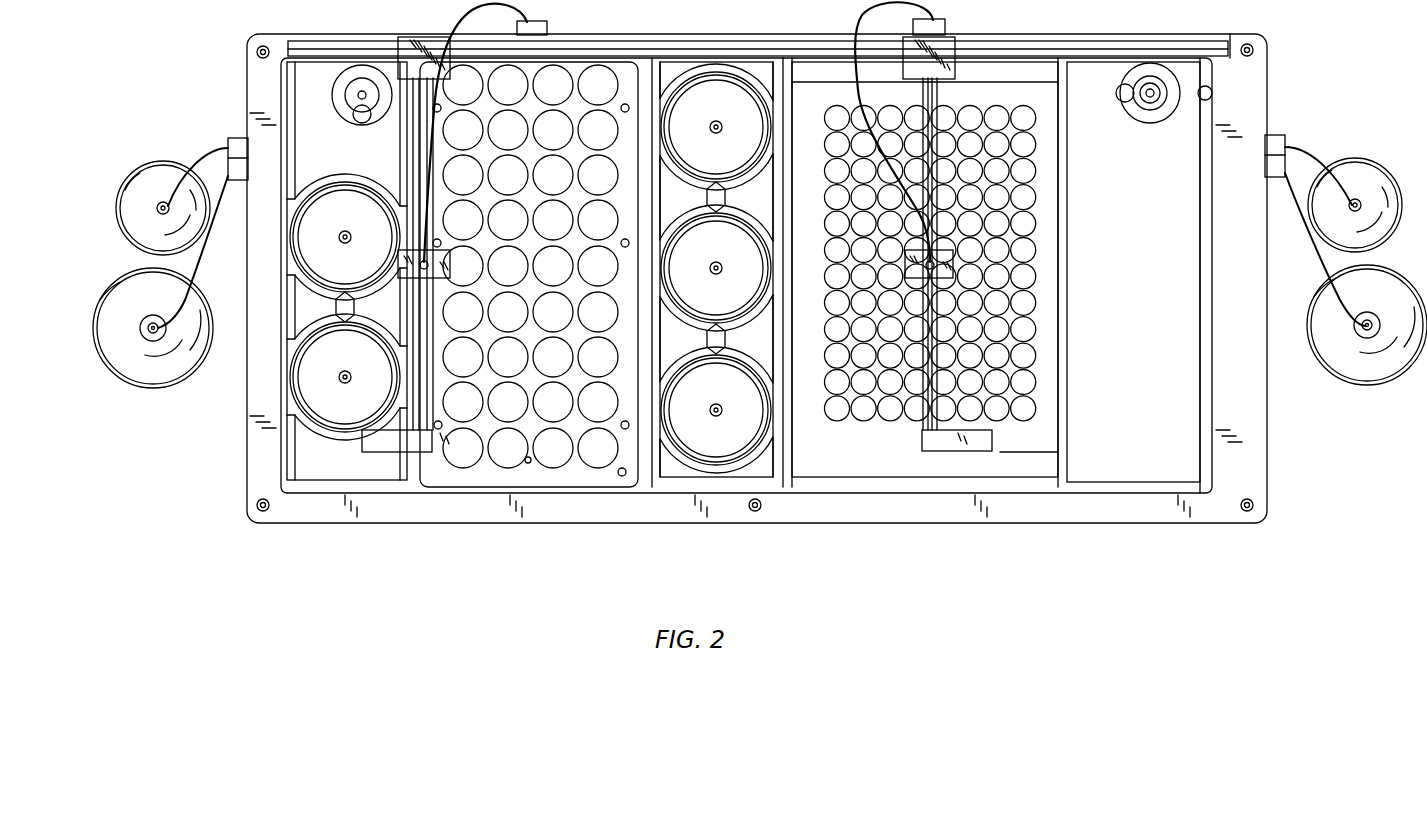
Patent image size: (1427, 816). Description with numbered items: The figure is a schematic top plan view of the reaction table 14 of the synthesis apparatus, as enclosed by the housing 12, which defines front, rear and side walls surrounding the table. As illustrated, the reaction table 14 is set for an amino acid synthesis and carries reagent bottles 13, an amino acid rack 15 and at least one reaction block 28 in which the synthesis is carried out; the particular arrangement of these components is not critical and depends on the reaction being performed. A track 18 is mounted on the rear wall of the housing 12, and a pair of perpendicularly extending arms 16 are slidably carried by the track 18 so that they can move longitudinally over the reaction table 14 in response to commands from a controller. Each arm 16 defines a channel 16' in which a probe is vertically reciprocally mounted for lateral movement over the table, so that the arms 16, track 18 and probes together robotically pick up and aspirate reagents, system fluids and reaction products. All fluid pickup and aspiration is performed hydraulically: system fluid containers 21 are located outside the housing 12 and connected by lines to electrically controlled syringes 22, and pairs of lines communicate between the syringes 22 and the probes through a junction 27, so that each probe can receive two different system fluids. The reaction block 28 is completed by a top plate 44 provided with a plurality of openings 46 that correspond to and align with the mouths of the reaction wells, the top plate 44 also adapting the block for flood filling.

The housing 12 is at (1265, 74).
The reagent bottles 13 is at (732, 118).
The reaction table 14 is at (838, 468).
The amino acid rack 15 is at (553, 480).
The arm 16 is at (454, 228).
The channel 16' is at (676, 226).
The track 18 is at (609, 40).
The system fluid containers 21 is at (124, 188).
The syringes 22 is at (237, 137).
The junction 27 is at (352, 105).
The reaction block 28 is at (1060, 396).
The top plate 44 is at (972, 263).
The openings 46 is at (1025, 198).